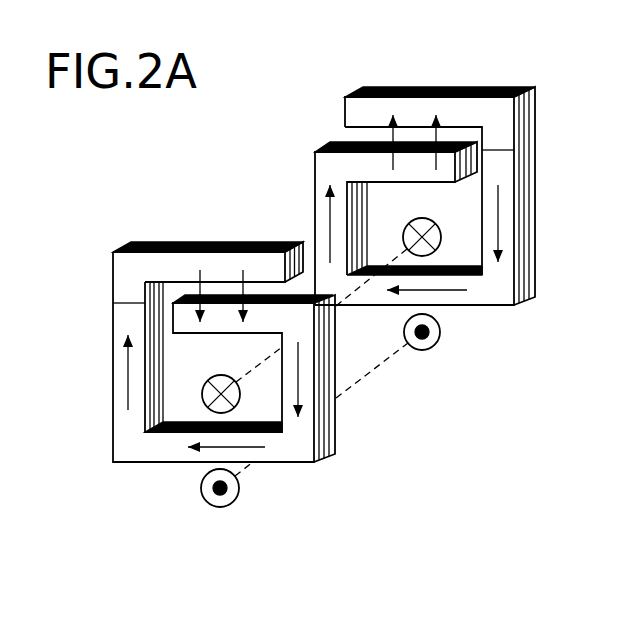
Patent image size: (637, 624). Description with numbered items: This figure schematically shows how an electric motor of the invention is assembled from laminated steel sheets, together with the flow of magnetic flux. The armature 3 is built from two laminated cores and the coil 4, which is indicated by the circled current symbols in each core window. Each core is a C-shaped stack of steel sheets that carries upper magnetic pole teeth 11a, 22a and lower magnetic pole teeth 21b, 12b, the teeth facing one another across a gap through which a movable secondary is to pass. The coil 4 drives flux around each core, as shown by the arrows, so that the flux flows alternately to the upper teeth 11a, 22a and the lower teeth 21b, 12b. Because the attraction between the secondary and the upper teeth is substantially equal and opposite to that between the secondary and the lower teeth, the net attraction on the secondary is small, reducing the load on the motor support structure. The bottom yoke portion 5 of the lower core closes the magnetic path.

The upper magnetic pole tooth 22a is at (420, 108).
The lower magnetic pole tooth 12b is at (370, 173).
The upper magnetic pole tooth 11a is at (177, 262).
The lower magnetic pole tooth 21b is at (182, 320).
The coil 4 is at (202, 397).
The yoke portion 5 is at (148, 453).
The armature 3 is at (298, 482).